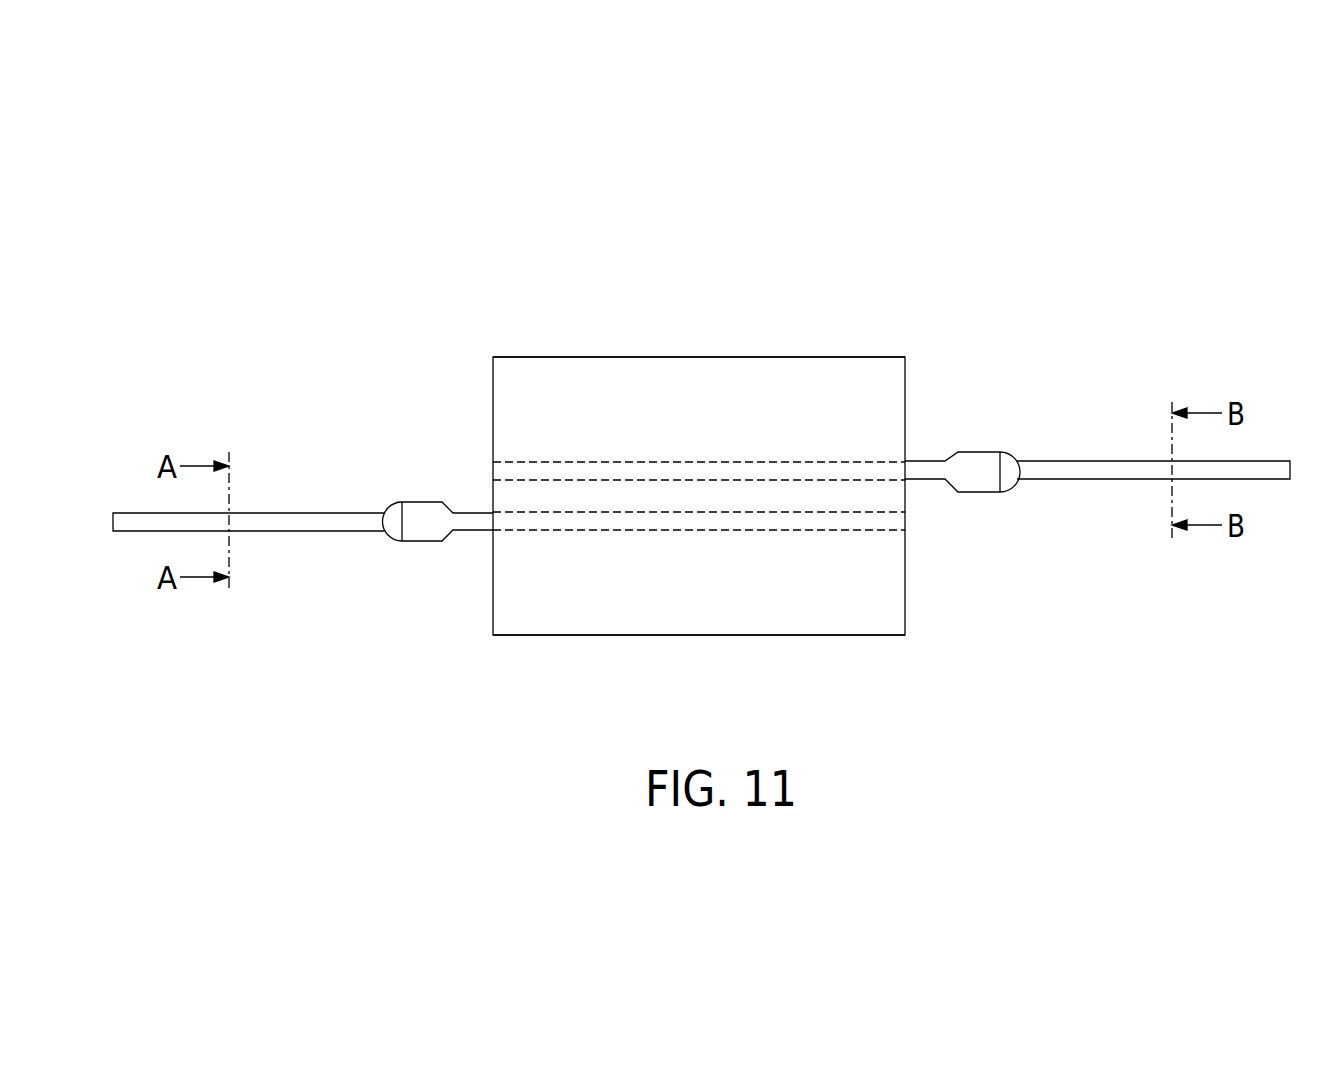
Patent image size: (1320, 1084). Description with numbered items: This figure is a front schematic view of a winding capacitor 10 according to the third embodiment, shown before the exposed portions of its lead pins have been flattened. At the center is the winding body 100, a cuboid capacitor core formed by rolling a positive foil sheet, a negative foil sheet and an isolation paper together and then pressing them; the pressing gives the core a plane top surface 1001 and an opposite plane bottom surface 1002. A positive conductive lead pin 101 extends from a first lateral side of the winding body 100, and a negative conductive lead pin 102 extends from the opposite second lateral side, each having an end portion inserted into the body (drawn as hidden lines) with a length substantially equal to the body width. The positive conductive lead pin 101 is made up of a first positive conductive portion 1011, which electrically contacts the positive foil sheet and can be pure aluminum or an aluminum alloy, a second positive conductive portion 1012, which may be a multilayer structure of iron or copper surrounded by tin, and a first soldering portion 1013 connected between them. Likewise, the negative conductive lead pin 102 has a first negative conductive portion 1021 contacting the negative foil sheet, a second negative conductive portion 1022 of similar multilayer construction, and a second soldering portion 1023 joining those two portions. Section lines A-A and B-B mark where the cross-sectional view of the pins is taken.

The winding capacitor 10 is at (872, 288).
The winding body 100 is at (653, 372).
The plane top surface 1001 is at (753, 355).
The plane bottom surface 1002 is at (750, 636).
The positive conductive lead pin 101 is at (288, 424).
The first positive conductive portion 1011 is at (430, 513).
The second positive conductive portion 1012 is at (310, 522).
The first soldering portion 1013 is at (393, 518).
The negative conductive lead pin 102 is at (1117, 374).
The first negative conductive portion 1021 is at (972, 465).
The second negative conductive portion 1022 is at (1097, 470).
The second soldering portion 1023 is at (1010, 468).